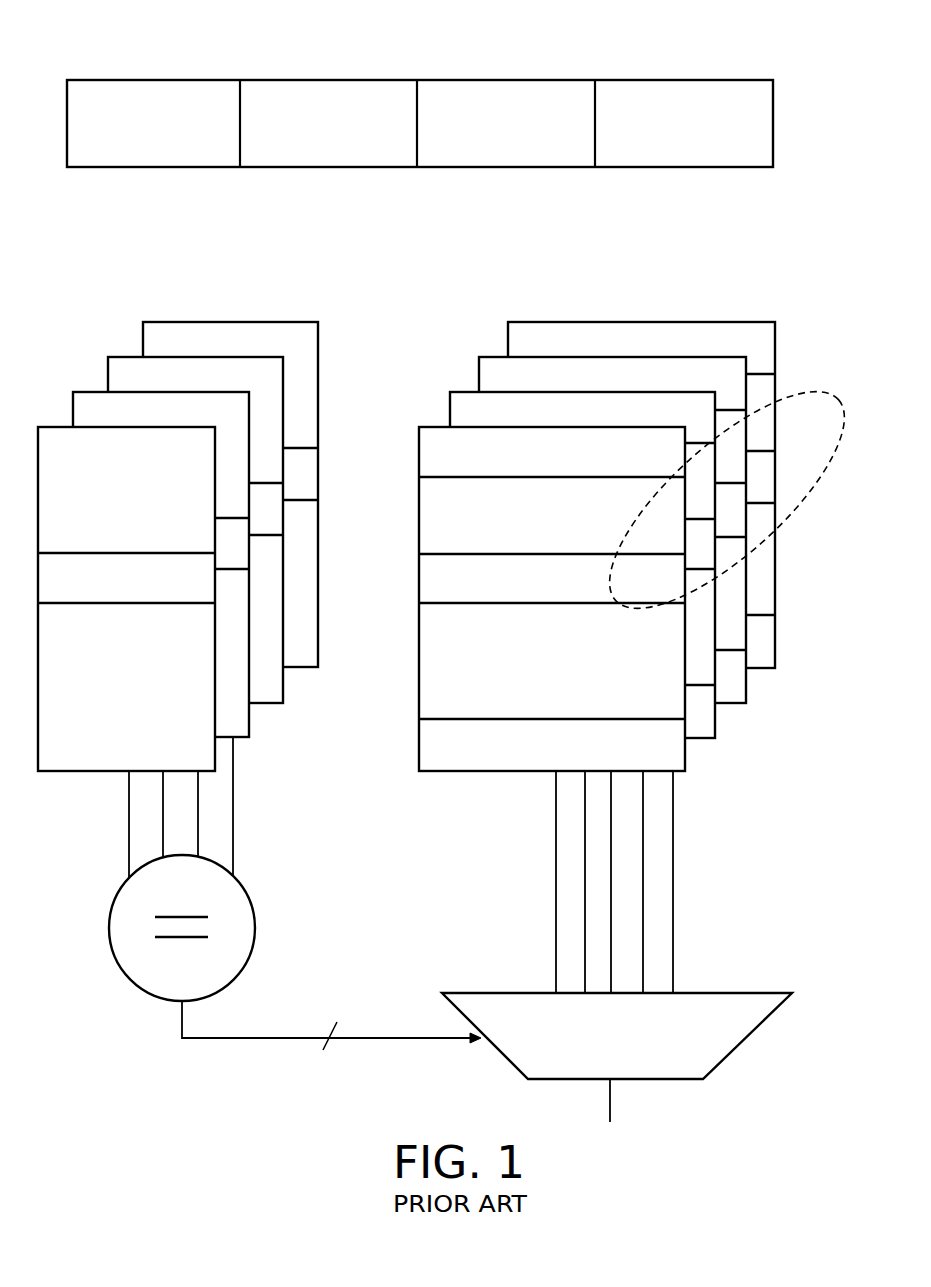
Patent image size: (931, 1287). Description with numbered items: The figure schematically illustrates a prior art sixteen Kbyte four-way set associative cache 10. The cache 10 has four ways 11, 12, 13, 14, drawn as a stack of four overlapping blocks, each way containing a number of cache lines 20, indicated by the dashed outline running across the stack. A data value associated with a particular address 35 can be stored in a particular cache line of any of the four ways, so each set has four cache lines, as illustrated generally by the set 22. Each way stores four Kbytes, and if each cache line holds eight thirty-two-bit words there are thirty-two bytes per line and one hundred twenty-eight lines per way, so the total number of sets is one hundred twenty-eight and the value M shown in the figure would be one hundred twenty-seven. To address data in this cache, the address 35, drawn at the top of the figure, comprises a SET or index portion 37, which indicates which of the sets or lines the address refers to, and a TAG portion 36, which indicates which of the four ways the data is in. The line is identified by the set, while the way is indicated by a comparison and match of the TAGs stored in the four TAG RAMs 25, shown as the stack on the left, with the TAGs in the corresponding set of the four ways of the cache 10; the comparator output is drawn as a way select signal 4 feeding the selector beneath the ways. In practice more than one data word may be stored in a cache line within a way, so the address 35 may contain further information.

The way select signal 4 is at (331, 1023).
The set associative cache 10 is at (608, 546).
The way 11 is at (776, 646).
The way 12 is at (747, 684).
The way 13 is at (716, 719).
The way 14 is at (553, 600).
The cache lines 20 is at (826, 479).
The set 22 is at (417, 577).
The TAG RAMs 25 is at (79, 364).
The address 35 is at (773, 121).
The TAG portion 36 is at (323, 80).
The index portion 37 is at (502, 80).